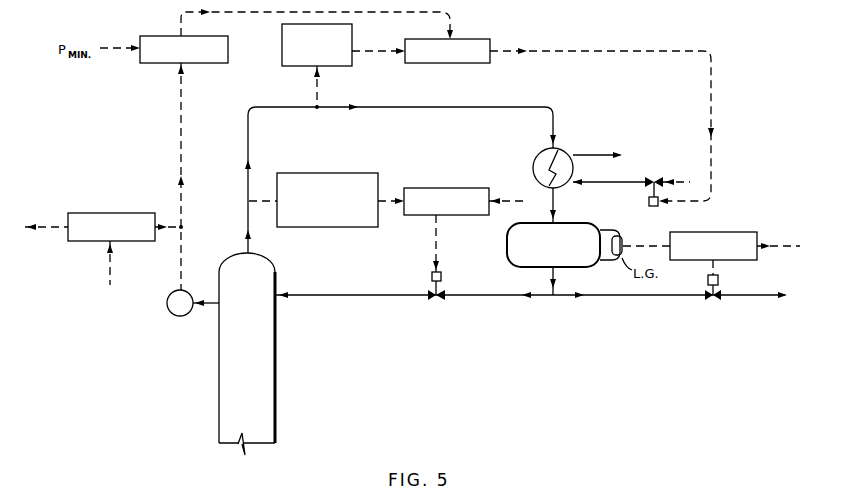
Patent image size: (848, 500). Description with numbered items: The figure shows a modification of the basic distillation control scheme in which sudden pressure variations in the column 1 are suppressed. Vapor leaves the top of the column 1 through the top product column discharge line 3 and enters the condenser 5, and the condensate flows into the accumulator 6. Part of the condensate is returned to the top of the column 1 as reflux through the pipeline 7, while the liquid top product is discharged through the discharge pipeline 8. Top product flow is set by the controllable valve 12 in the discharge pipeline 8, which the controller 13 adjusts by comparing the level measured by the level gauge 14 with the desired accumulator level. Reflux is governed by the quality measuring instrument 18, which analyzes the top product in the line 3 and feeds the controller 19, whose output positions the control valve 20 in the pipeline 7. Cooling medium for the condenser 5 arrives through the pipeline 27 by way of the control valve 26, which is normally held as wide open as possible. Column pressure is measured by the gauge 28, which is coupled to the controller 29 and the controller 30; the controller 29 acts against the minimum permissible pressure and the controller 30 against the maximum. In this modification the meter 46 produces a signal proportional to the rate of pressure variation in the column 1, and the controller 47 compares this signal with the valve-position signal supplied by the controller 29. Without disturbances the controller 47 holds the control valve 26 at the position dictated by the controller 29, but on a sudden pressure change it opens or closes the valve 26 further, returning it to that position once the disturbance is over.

The column 1 is at (250, 352).
The top product column discharge line 3 is at (248, 140).
The condenser 5 is at (541, 152).
The accumulator 6 is at (572, 223).
The pipeline 7 is at (468, 295).
The discharge pipeline 8 is at (762, 280).
The controllable valve 12 is at (718, 303).
The controller 13 is at (727, 232).
The level gauge 14 is at (620, 232).
The quality measuring instrument 18 is at (363, 173).
The controller 19 is at (455, 188).
The control valve 20 is at (441, 303).
The control valve 26 is at (658, 178).
The pipeline 27 is at (600, 183).
The gauge 28 is at (177, 316).
The controller 29 is at (160, 36).
The controller 30 is at (125, 213).
The meter 46 is at (352, 32).
The controller 47 is at (470, 39).